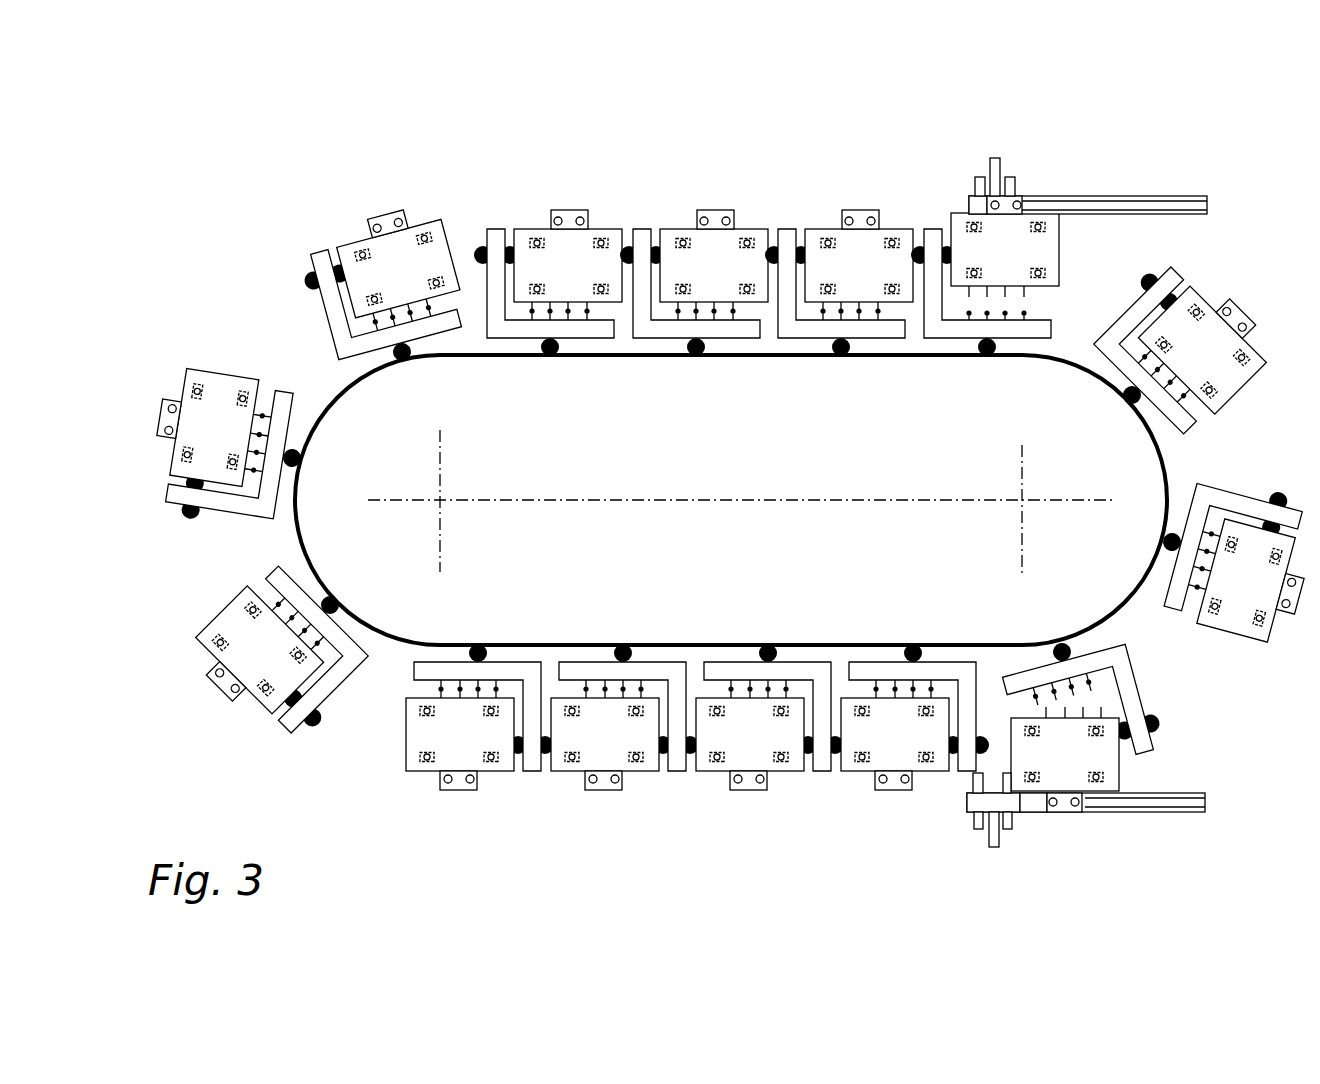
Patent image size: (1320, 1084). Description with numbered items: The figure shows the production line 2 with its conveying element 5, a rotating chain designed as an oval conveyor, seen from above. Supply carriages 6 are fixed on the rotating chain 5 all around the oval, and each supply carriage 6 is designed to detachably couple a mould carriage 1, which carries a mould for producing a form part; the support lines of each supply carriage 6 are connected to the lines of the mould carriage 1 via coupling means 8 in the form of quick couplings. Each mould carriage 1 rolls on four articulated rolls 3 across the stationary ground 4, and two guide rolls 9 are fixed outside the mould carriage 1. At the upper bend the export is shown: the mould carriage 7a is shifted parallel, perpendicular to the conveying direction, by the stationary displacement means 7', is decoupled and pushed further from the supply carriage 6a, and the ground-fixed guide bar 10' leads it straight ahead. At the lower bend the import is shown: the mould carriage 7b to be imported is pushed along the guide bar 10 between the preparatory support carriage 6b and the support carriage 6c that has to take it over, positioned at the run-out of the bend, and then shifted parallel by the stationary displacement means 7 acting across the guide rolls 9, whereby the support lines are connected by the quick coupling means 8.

The mould carriage 1 is at (575, 260).
The production line 2 is at (222, 552).
The articulated rolls 3 is at (488, 760).
The stationary ground 4 is at (355, 828).
The conveying element 5 is at (338, 392).
The supply carriage 6 is at (802, 332).
The supply carriage 6a is at (937, 330).
The preparatory support carriage 6b is at (935, 673).
The support carriage 6c is at (1095, 662).
The stationary displacement means 7 is at (1019, 840).
The stationary displacement means 7' is at (999, 151).
The mould carriage being exported 7a is at (1002, 257).
The mould carriage being imported 7b is at (1064, 763).
The coupling means 8 is at (1053, 692).
The guide rolls 9 is at (1245, 327).
The guide bar 10 is at (1086, 850).
The guide bar 10' is at (1103, 149).